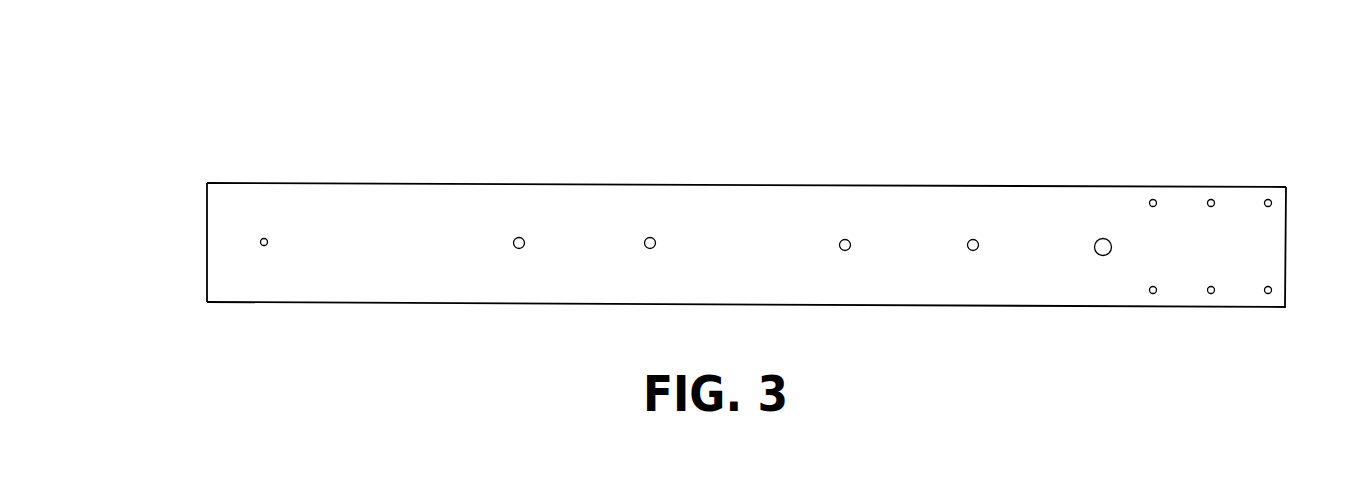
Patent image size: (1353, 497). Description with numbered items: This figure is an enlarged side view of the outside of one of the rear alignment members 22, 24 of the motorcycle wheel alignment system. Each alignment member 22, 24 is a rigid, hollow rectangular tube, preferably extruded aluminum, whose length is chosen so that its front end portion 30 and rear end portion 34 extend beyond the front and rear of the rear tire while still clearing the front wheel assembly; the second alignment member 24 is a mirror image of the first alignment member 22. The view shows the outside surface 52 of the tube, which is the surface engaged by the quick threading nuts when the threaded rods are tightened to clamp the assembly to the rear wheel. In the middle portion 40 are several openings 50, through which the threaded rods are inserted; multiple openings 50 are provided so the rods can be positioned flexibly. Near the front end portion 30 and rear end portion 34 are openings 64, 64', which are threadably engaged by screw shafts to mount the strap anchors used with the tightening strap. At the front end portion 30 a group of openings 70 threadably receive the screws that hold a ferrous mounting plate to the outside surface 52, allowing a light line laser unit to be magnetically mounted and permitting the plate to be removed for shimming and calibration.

The first alignment member 22 is at (722, 201).
The second alignment member 24 is at (214, 135).
The front end portion 30 is at (1272, 187).
The rear end portion 34 is at (270, 183).
The middle portion 40 is at (755, 185).
The openings 50 is at (647, 232).
The outside surface 52 is at (754, 260).
The opening 64 is at (1084, 186).
The opening 64' is at (202, 221).
The openings 70 is at (1265, 197).